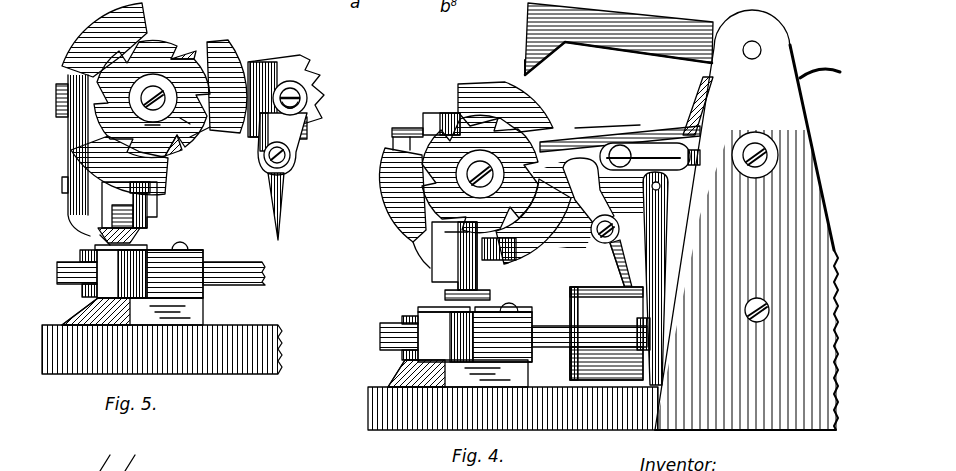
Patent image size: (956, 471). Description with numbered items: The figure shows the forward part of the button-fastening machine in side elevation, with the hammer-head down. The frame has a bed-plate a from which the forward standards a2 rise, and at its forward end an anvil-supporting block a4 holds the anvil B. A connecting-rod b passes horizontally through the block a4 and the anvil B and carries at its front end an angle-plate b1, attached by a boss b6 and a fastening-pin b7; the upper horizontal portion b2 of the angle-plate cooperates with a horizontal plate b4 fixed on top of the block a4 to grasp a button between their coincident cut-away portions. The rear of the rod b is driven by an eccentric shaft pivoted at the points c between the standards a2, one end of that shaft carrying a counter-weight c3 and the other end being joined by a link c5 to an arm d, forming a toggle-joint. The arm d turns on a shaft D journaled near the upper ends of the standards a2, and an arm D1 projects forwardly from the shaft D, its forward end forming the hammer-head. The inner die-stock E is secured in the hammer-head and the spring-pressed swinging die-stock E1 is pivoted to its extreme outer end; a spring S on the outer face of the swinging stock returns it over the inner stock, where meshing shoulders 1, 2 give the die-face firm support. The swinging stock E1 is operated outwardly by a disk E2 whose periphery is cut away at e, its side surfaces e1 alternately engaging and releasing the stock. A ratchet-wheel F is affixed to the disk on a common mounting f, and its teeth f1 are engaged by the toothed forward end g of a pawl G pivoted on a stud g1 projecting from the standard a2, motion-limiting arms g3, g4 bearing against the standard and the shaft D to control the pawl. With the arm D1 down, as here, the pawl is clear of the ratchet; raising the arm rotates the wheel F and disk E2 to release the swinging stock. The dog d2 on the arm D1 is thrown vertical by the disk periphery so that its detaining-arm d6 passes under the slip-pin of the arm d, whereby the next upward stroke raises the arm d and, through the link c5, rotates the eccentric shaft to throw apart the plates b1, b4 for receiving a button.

In FIG. 5, the bed-plate a is at (228, 332).
In FIG. 4, the bed-plate a is at (513, 407).
In FIG. 4, the forward standard a2 is at (750, 225).
In FIG. 5, the anvil-supporting block a4 is at (132, 304).
In FIG. 4, the anvil-supporting block a4 is at (458, 373).
In FIG. 5, the anvil B is at (150, 274).
In FIG. 4, the anvil B is at (475, 337).
In FIG. 5, the connecting-rod b is at (238, 272).
In FIG. 4, the connecting-rod b is at (547, 328).
In FIG. 5, the angle-plate b1 is at (85, 250).
In FIG. 4, the angle-plate b1 is at (408, 314).
In FIG. 5, the upper horizontal portion of angle-plate b2 is at (115, 238).
In FIG. 4, the upper horizontal portion of angle-plate b2 is at (444, 299).
In FIG. 5, the horizontal plate b4 is at (186, 231).
In FIG. 4, the horizontal plate b4 is at (501, 298).
In FIG. 5, the boss b6 is at (62, 288).
In FIG. 4, the boss b6 is at (390, 338).
In FIG. 5, the fastening-pin b7 is at (84, 294).
In FIG. 4, the fastening-pin b7 is at (402, 356).
In FIG. 4, the eccentric pivot point c is at (770, 303).
In FIG. 4, the counter-weight c3 is at (556, 282).
In FIG. 4, the link c5 is at (650, 220).
In FIG. 5, the arm d is at (300, 100).
In FIG. 4, the arm d is at (650, 153).
In FIG. 5, the dog d2 is at (297, 156).
In FIG. 4, the dog d2 is at (626, 276).
In FIG. 4, the detaining-arm d6 is at (597, 118).
In FIG. 4, the shaft D is at (778, 148).
In FIG. 4, the arm D1 is at (602, 128).
In FIG. 5, the inner die-stock E is at (152, 205).
In FIG. 4, the inner die-stock E is at (440, 276).
In FIG. 5, the swinging die-stock E1 is at (150, 225).
In FIG. 4, the swinging die-stock E1 is at (436, 252).
In FIG. 5, the mutilated disk E2 is at (128, 32).
In FIG. 4, the mutilated disk E2 is at (395, 205).
In FIG. 4, the cut-away portion of disk e is at (492, 262).
In FIG. 4, the side surface of disk e1 is at (462, 88).
In FIG. 5, the ratchet-wheel F is at (152, 92).
In FIG. 4, the ratchet-wheel F is at (480, 173).
In FIG. 5, the common mounting f is at (166, 97).
In FIG. 4, the common mounting f is at (489, 172).
In FIG. 5, the ratchet teeth f1 is at (178, 65).
In FIG. 4, the ratchet teeth f1 is at (580, 211).
In FIG. 4, the pawl G is at (646, 52).
In FIG. 4, the toothed forward end of pawl g is at (537, 74).
In FIG. 4, the stud g1 is at (748, 56).
In FIG. 4, the motion-limiting arm g3 is at (692, 106).
In FIG. 4, the motion-limiting arm g4 is at (820, 81).
In FIG. 5, the spring S is at (64, 150).
In FIG. 5, the meshing shoulder 1 is at (152, 205).
In FIG. 4, the meshing shoulder 1 is at (482, 290).
In FIG. 5, the meshing shoulder 2 is at (100, 220).